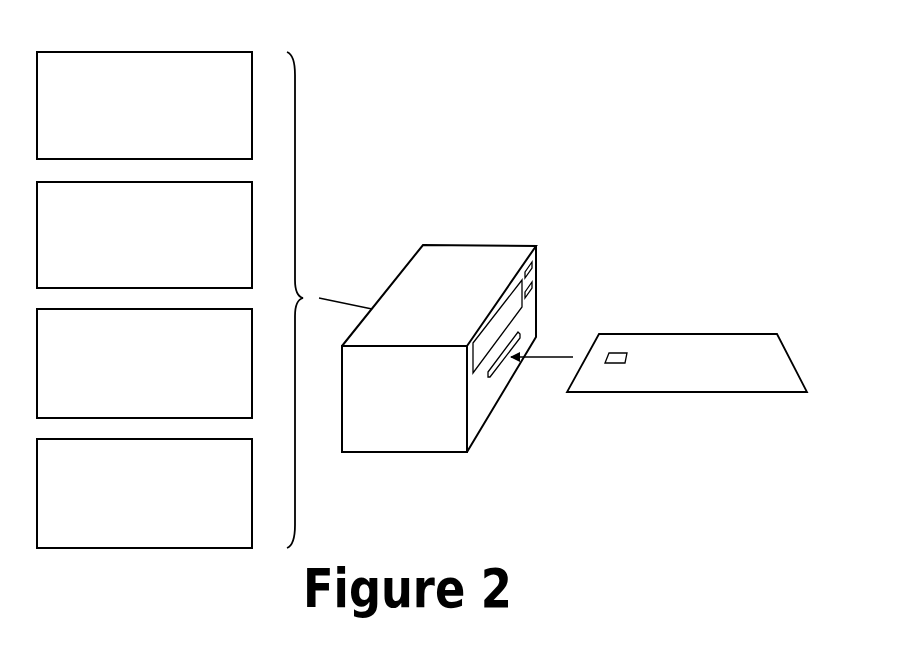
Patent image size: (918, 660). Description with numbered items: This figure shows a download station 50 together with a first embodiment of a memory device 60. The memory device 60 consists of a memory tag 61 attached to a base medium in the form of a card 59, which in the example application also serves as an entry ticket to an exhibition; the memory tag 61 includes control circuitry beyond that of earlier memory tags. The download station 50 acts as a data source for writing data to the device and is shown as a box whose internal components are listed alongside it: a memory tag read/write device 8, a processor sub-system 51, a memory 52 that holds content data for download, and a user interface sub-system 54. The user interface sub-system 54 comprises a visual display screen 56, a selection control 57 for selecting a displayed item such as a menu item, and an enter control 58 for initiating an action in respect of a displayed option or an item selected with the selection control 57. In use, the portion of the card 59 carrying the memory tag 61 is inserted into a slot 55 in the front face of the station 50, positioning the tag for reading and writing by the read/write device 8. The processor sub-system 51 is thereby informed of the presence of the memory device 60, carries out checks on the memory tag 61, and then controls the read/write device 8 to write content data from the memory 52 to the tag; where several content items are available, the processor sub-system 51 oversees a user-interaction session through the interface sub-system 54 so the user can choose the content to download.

The processor sub-system 51 is at (144, 105).
The memory 52 is at (144, 235).
The memory tag read/write device 8 is at (144, 363).
The user interface sub-system 54 is at (144, 493).
The download station 50 is at (485, 233).
The slot 55 is at (495, 373).
The visual display screen 56 is at (505, 318).
The selection control 57 is at (532, 297).
The enter control 58 is at (533, 267).
The card 59 is at (722, 374).
The memory device 60 is at (687, 345).
The memory tag 61 is at (615, 365).